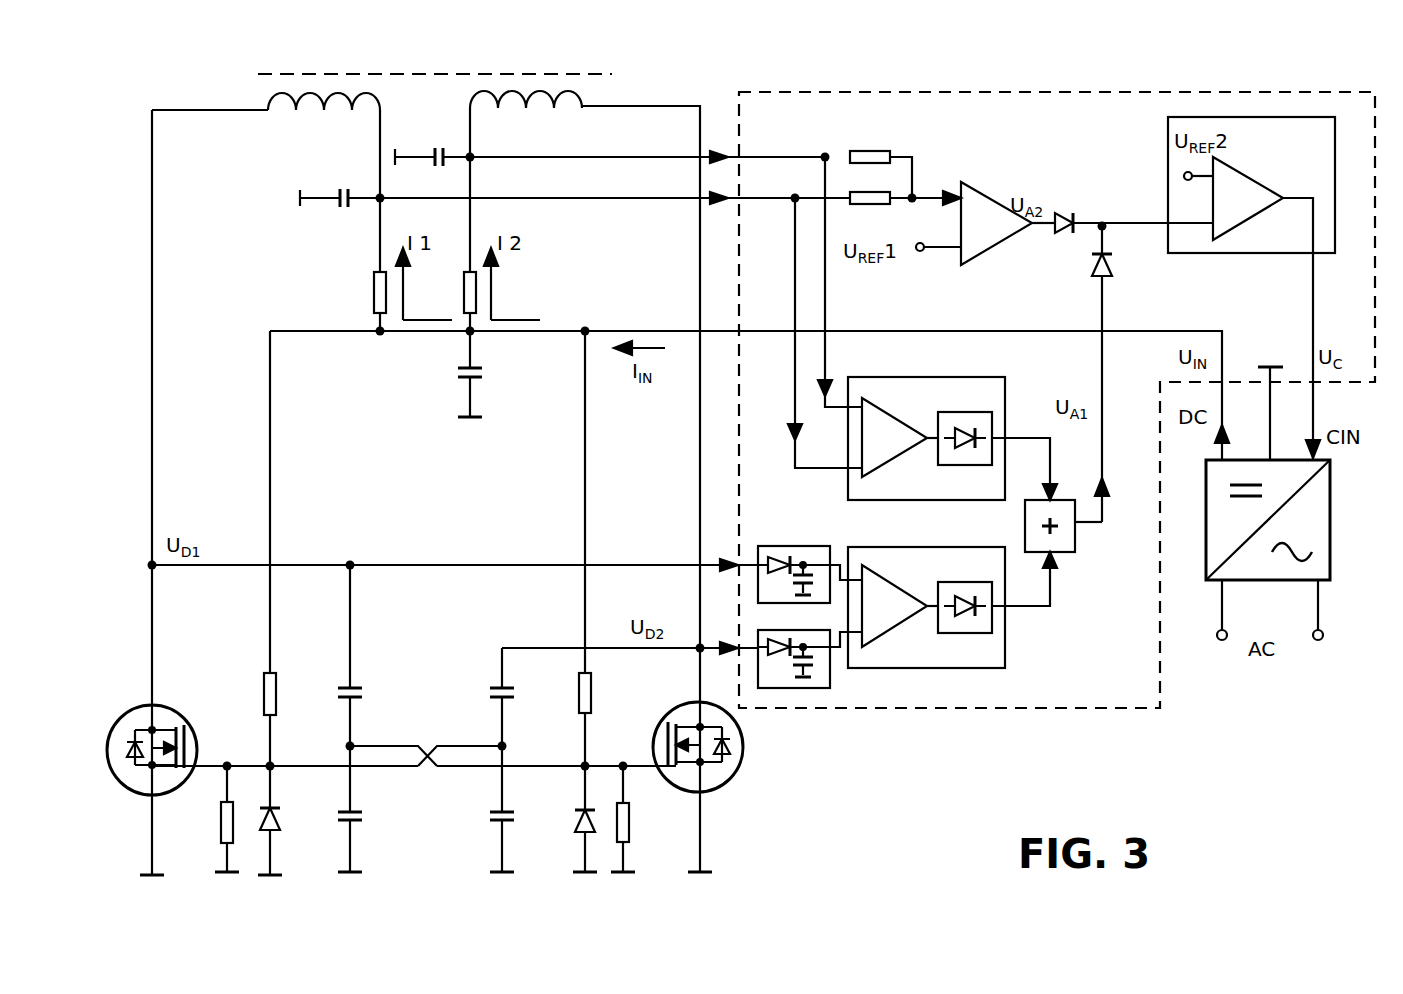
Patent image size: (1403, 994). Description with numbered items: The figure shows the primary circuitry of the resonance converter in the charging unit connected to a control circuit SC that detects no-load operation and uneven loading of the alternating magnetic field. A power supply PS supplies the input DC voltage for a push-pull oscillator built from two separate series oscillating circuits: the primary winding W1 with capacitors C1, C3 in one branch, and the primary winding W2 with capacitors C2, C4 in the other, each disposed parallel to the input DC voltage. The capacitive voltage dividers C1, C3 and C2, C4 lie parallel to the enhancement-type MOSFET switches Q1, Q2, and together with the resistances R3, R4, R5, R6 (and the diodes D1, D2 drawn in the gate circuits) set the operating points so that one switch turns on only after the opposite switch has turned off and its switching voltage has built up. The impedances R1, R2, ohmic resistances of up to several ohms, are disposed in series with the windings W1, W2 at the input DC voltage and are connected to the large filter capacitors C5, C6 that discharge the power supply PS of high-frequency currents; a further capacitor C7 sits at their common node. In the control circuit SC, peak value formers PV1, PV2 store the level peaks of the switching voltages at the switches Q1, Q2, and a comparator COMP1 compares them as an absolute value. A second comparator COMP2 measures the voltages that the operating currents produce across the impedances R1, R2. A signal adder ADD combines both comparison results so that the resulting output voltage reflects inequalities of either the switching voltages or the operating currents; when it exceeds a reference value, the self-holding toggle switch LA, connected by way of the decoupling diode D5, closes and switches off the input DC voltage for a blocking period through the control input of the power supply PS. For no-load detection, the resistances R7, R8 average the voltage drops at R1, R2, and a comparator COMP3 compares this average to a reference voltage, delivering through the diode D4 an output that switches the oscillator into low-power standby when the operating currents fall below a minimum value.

The primary winding W1 is at (324, 117).
The primary winding W2 is at (532, 116).
The capacitor of capacitive voltage divider C1 is at (371, 693).
The capacitor of capacitive voltage divider C2 is at (480, 693).
The capacitor of capacitive voltage divider C3 is at (371, 827).
The capacitor of capacitive voltage divider C4 is at (476, 827).
The filter capacitor C5 is at (340, 184).
The filter capacitor C6 is at (432, 143).
The capacitor C7 is at (432, 382).
The impedance R1 is at (354, 292).
The impedance R2 is at (450, 292).
The resistance R3 is at (244, 694).
The resistance R4 is at (608, 693).
The resistance R5 is at (204, 823).
The resistance R6 is at (643, 824).
The resistance R7 is at (881, 161).
The resistance R8 is at (878, 186).
The diode D1 is at (291, 824).
The diode D2 is at (561, 826).
The diode D4 is at (1115, 246).
The decoupling diode D5 is at (1124, 374).
The switch Q1 is at (152, 719).
The switch Q2 is at (716, 756).
The peak value former PV1 is at (810, 562).
The peak value former PV2 is at (810, 647).
The comparator COMP1 is at (952, 595).
The comparator COMP2 is at (922, 328).
The comparator COMP3 is at (981, 205).
The signal adder ADD is at (1070, 546).
The self-holding toggle switch LA is at (1251, 287).
The power supply PS is at (1333, 543).
The control circuit SC is at (1108, 122).